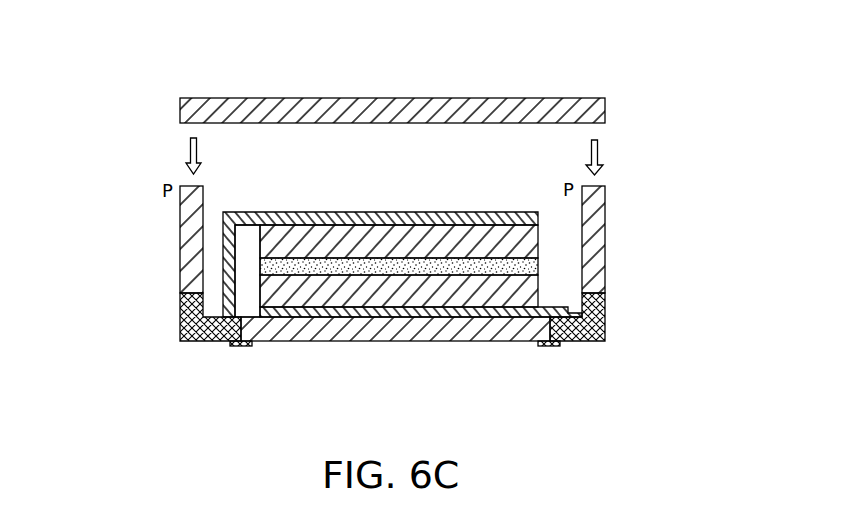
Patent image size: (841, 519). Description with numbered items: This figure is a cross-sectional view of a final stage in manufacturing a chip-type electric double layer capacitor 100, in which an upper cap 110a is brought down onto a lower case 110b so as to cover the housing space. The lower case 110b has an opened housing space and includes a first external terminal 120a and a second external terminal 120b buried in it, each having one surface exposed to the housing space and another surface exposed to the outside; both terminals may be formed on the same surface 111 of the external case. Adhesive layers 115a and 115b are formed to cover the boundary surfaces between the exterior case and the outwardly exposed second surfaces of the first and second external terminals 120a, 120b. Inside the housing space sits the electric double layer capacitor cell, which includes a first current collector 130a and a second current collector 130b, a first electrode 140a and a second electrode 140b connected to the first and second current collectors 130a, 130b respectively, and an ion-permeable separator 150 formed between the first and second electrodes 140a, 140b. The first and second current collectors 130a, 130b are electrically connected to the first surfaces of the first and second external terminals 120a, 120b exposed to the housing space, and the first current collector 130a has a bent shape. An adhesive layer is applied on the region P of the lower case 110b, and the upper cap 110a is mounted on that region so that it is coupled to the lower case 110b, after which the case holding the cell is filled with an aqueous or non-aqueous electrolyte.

The chip-type electric double layer capacitor 100 is at (418, 49).
The upper cap 110a is at (523, 108).
The lower case 110b is at (597, 196).
The surface of the external case 111 is at (403, 333).
The adhesive layer 115a is at (243, 347).
The adhesive layer 115b is at (547, 347).
The first external terminal 120a is at (184, 317).
The second external terminal 120b is at (573, 347).
The first current collector 130a is at (231, 276).
The second current collector 130b is at (583, 300).
The first electrode 140a is at (273, 245).
The second electrode 140b is at (532, 297).
The ion-permeable separator 150 is at (537, 265).